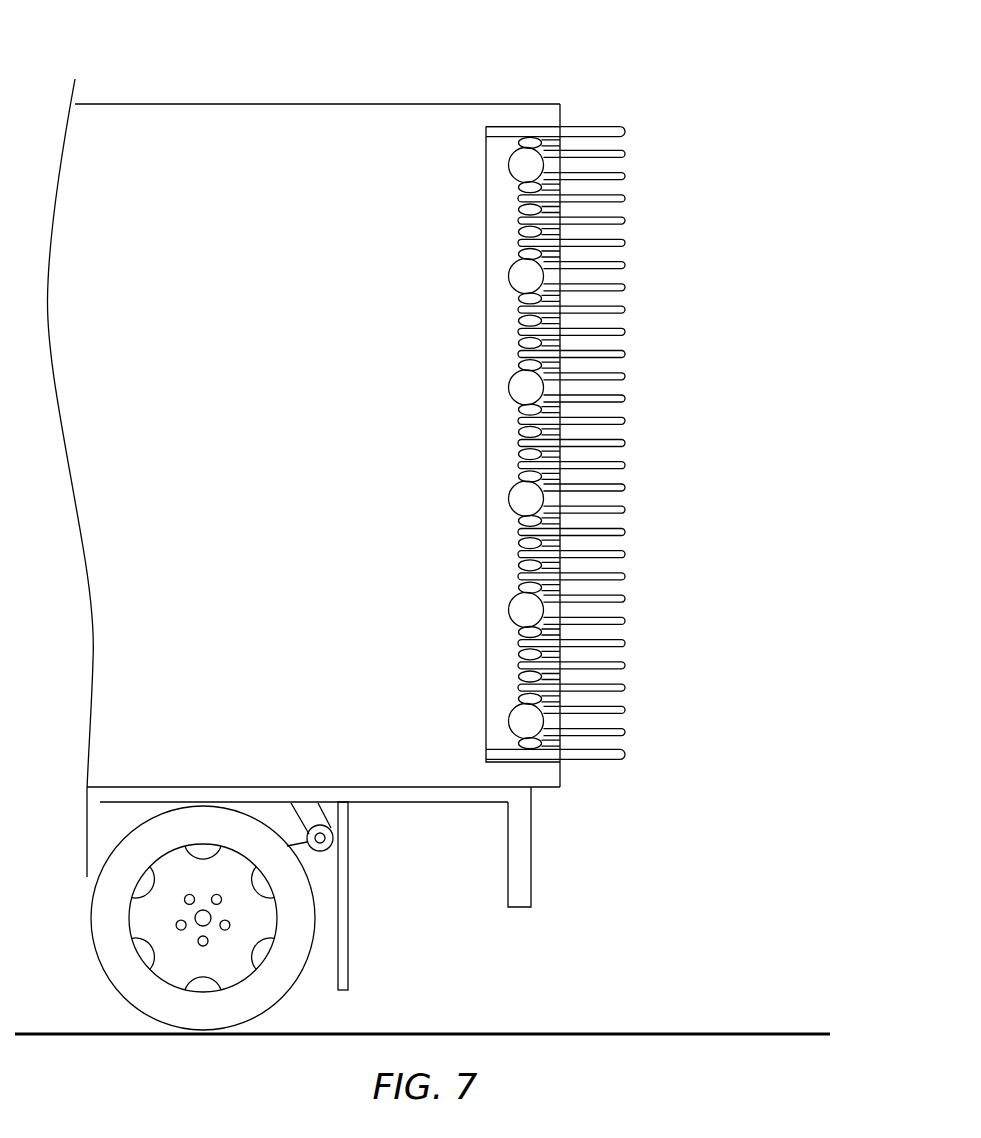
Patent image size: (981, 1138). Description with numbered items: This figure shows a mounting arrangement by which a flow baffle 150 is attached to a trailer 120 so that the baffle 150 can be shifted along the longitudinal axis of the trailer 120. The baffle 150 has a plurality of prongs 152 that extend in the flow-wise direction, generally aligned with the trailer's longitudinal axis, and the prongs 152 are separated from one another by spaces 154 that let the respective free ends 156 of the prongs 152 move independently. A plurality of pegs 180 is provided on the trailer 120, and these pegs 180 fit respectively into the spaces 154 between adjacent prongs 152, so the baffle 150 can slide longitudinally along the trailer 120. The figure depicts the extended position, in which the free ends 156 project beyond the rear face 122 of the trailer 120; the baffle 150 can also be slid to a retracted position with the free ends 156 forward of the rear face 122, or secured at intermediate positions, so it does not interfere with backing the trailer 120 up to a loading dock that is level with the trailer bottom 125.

The trailer 120 is at (296, 79).
The rear face 122 is at (570, 107).
The bottom 125 is at (554, 804).
The flow baffle 150 is at (502, 125).
The prongs 152 is at (613, 131).
The spaces 154 is at (622, 253).
The free ends 156 is at (625, 308).
The pegs 180 is at (537, 410).